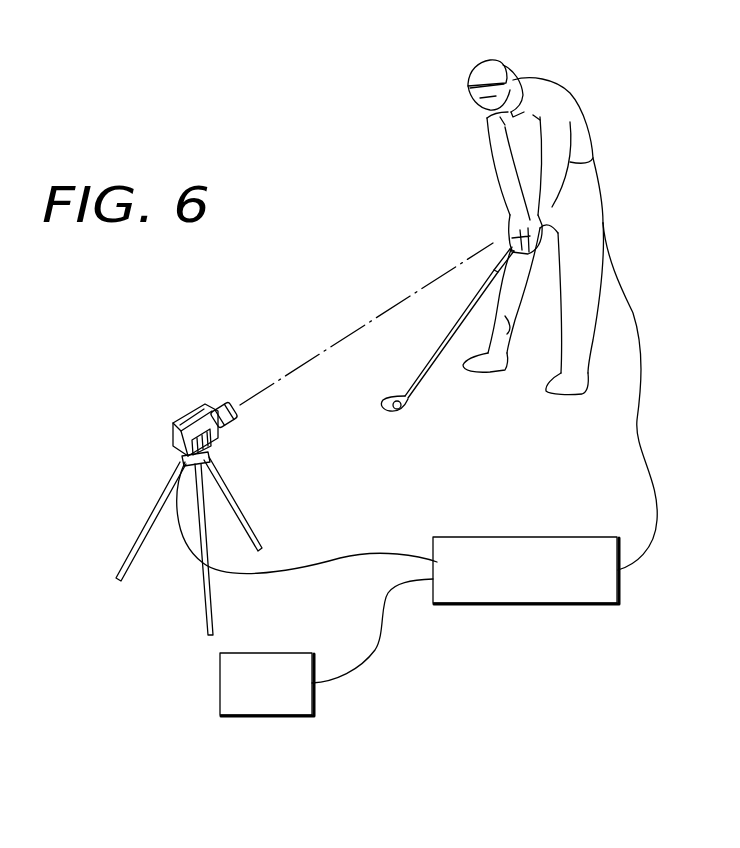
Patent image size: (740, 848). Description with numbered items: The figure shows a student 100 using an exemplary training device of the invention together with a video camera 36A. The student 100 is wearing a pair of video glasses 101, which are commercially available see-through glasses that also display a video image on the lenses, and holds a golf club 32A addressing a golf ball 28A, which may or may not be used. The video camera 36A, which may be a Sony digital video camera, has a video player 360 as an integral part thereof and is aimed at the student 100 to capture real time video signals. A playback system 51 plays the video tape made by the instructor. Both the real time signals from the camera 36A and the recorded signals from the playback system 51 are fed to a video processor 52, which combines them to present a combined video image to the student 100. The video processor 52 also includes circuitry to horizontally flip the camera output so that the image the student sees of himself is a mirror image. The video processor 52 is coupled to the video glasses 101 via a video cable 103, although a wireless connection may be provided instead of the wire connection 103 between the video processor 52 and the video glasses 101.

The student 100 is at (600, 108).
The video glasses 101 is at (490, 62).
The video cable 103 is at (640, 455).
The video camera 36A is at (180, 421).
The video player 360 is at (224, 436).
The golf club 32A is at (425, 363).
The golf ball 28A is at (395, 416).
The video processor 52 is at (458, 537).
The playback system 51 is at (220, 696).